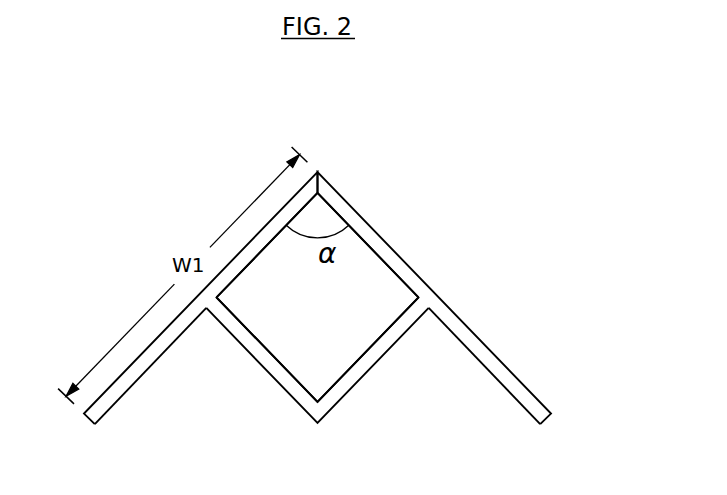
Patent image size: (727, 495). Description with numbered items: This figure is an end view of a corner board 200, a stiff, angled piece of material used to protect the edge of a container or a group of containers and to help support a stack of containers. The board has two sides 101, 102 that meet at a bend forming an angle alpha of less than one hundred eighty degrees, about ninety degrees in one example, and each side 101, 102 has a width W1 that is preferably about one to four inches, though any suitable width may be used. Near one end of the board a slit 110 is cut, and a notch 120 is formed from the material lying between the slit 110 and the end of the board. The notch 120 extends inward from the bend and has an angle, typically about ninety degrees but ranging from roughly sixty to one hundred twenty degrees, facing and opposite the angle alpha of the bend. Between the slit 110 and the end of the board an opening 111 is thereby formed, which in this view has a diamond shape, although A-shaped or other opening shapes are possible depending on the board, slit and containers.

The corner board 200 is at (128, 198).
The slit 110 is at (383, 233).
The side 101 is at (138, 376).
The side 102 is at (497, 350).
The notch 120 is at (382, 360).
The opening 111 is at (298, 333).